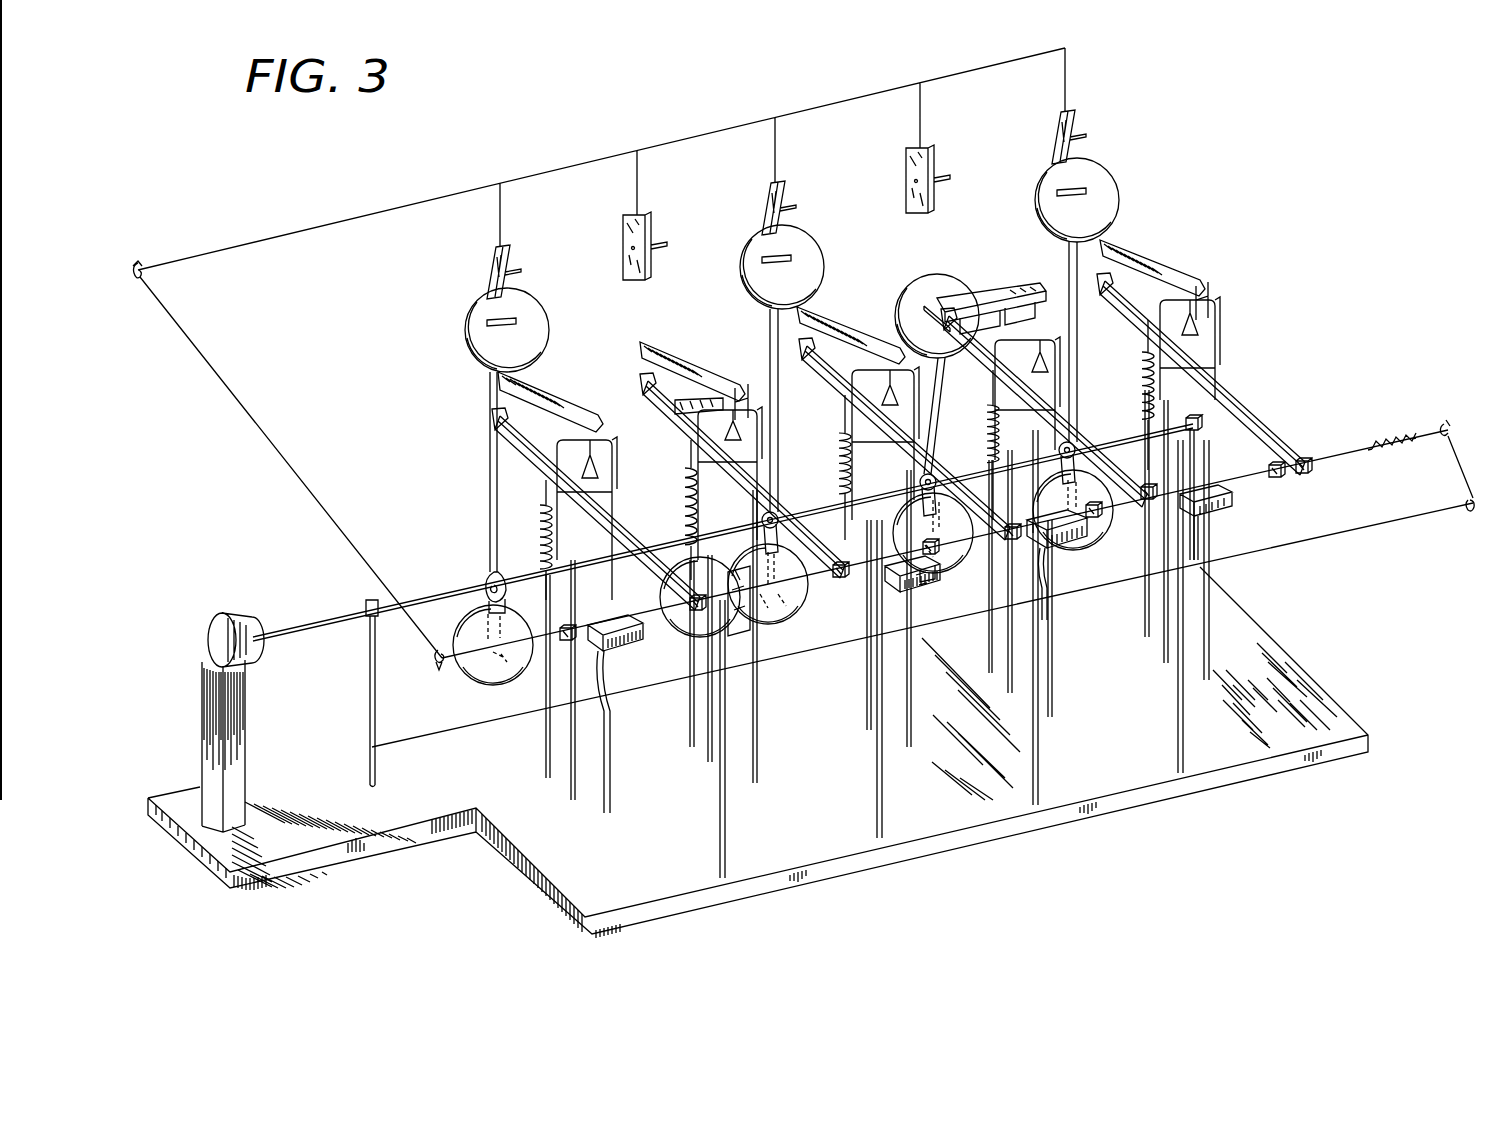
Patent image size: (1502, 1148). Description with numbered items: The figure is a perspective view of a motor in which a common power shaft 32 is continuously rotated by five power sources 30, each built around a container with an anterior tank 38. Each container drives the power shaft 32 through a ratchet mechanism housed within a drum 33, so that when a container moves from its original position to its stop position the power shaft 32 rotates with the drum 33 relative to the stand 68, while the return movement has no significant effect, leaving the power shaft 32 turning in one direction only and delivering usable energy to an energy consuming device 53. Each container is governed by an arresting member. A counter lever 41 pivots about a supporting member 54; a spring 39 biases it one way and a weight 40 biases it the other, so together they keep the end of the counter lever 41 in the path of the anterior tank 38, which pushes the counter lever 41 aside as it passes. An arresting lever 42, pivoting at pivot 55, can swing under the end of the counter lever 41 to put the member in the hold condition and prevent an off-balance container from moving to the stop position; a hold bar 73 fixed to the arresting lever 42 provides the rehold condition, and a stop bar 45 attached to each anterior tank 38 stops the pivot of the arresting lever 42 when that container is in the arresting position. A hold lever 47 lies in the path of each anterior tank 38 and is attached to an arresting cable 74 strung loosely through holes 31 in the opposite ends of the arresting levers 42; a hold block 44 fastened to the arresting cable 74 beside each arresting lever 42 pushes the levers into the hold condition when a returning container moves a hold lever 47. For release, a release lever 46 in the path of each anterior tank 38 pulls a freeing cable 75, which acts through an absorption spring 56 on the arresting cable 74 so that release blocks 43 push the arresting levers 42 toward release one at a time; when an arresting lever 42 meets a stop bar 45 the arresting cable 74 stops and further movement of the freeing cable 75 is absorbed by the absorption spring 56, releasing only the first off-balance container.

The power source 30 is at (468, 447).
The holes 31 is at (840, 576).
The power shaft 32 is at (436, 594).
The drum 33 is at (486, 579).
The anterior tank 38 is at (548, 320).
The spring 39 is at (688, 506).
The weight 40 is at (596, 480).
The counter lever 41 is at (554, 390).
The arresting lever 42 is at (662, 522).
The release block 43 is at (566, 626).
The hold block 44 is at (1016, 536).
The stop bar 45 is at (484, 327).
The release lever 46 is at (638, 640).
The hold lever 47 is at (515, 254).
The energy consuming device 53 is at (223, 616).
The supporting member 54 is at (558, 792).
The pivot 55 is at (556, 467).
The absorption spring 56 is at (1398, 426).
The stand 68 is at (368, 688).
The hold bar 73 is at (742, 384).
The arresting cable 74 is at (370, 204).
The freeing cable 75 is at (812, 654).